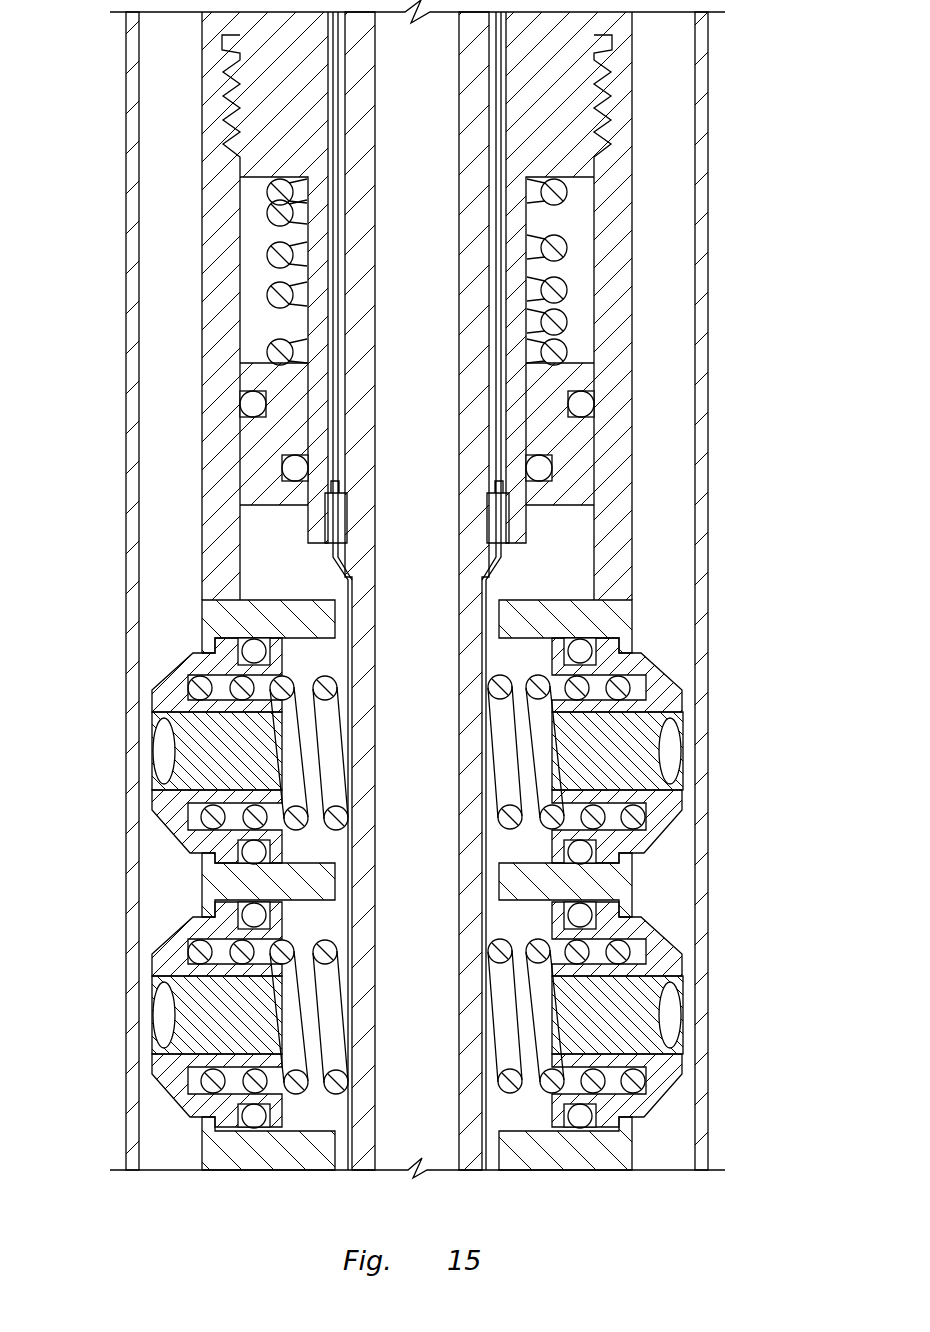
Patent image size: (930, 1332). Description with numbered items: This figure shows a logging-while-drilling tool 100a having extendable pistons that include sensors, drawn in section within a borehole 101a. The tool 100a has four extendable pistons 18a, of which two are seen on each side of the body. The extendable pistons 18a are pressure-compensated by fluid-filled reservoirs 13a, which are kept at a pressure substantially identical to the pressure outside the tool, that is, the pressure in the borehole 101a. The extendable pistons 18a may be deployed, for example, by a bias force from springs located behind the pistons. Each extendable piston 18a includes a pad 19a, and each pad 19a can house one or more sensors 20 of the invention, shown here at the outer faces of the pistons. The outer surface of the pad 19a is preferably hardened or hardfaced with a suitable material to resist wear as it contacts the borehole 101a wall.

The tool 100a is at (650, 93).
The borehole 101a is at (708, 568).
The fluid-filled reservoir 13a is at (507, 757).
The extendable piston 18a is at (684, 699).
The pad 19a is at (615, 1003).
The sensor 20 is at (165, 752).